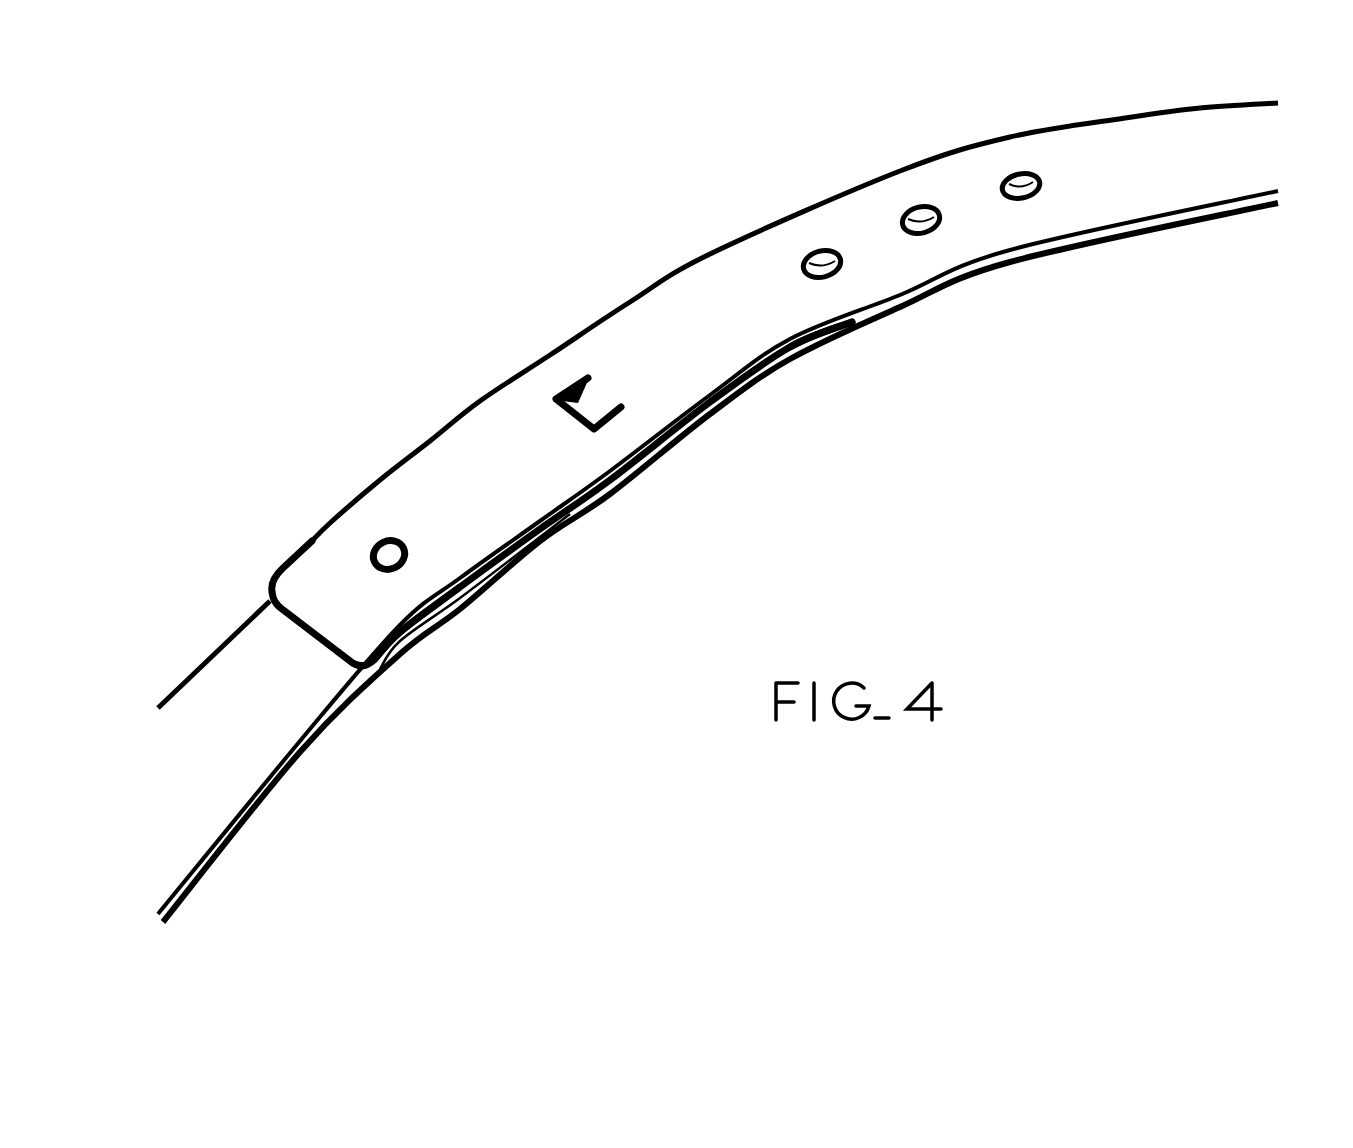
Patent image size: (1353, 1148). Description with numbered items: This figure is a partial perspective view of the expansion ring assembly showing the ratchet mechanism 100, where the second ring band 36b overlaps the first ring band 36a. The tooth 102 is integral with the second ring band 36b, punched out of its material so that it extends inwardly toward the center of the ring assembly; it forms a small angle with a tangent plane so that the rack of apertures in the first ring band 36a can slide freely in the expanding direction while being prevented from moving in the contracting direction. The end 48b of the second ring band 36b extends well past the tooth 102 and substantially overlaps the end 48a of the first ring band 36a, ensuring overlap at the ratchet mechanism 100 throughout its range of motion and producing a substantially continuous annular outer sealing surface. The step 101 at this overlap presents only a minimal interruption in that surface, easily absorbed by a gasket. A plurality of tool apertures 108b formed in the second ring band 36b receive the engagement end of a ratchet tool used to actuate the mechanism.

The ratchet mechanism 100 is at (588, 170).
The first ring band 36a is at (228, 834).
The second ring band 36b is at (1125, 116).
The step 101 is at (306, 630).
The tooth 102 is at (590, 405).
The end of expansion ring band 36a 48a is at (818, 362).
The end of expansion ring band 36b 48b is at (417, 588).
The tool apertures 108b is at (817, 252).